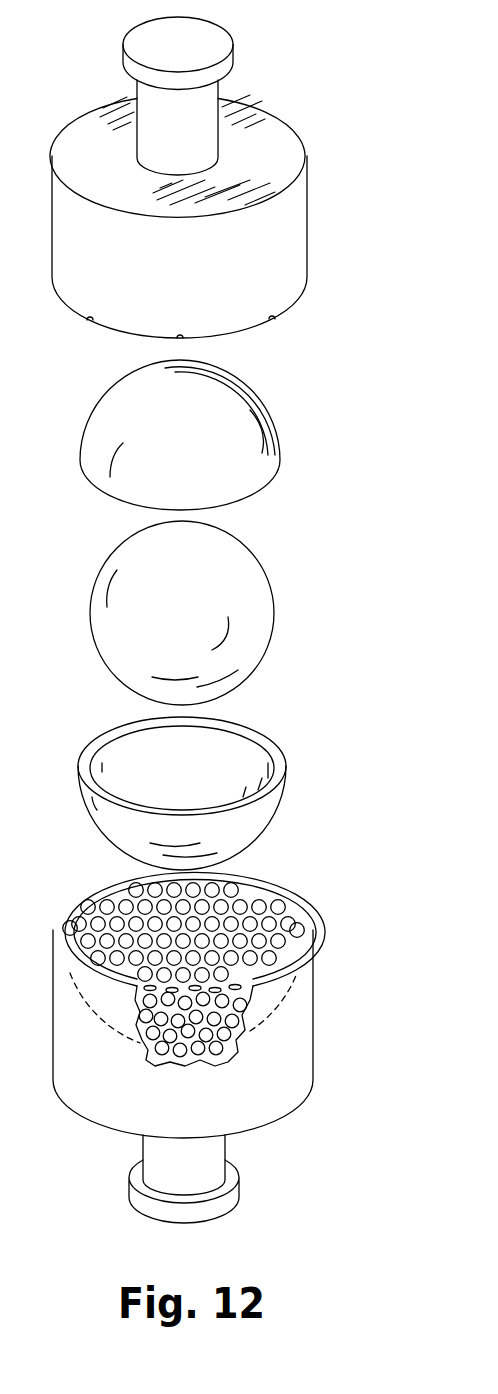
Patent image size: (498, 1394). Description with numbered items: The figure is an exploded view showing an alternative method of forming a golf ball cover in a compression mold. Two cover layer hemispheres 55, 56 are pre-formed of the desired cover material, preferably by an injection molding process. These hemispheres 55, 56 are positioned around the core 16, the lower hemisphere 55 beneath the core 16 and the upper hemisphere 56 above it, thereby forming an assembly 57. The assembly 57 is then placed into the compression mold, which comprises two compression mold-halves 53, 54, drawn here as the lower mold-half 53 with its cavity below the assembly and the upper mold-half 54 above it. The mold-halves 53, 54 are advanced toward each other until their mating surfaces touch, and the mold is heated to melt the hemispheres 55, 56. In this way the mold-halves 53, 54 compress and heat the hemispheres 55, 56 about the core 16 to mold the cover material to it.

The compression mold-half 53 is at (297, 1047).
The compression mold-half 54 is at (297, 240).
The cover layer hemisphere 55 is at (195, 785).
The cover layer hemisphere 56 is at (193, 454).
The core 16 is at (194, 625).
The assembly 57 is at (328, 574).